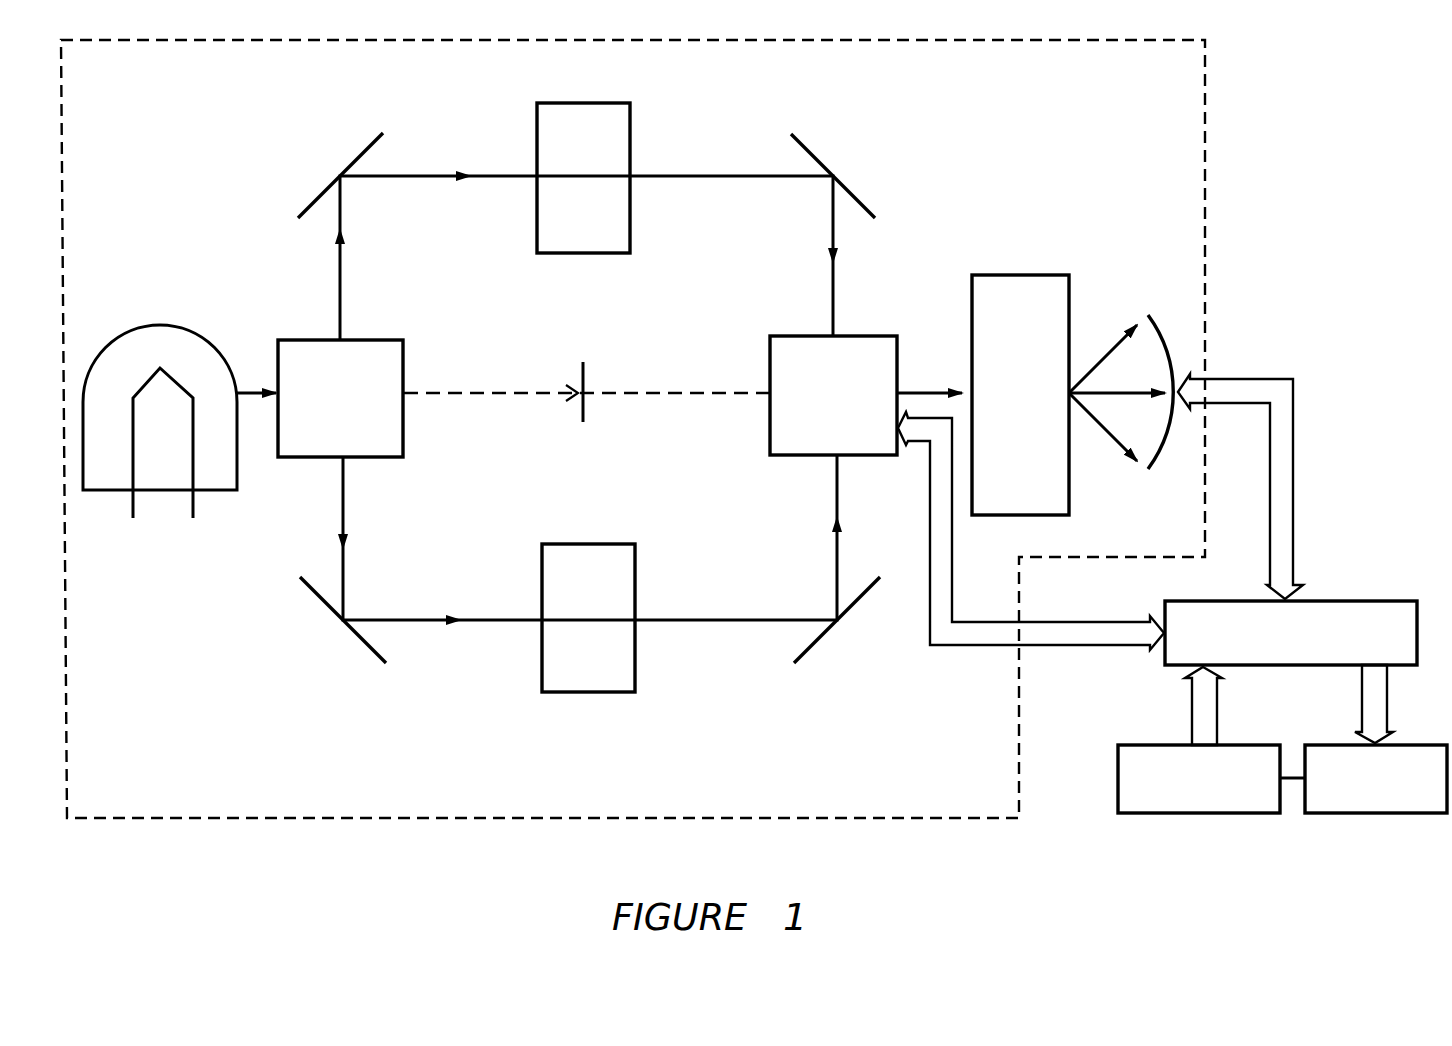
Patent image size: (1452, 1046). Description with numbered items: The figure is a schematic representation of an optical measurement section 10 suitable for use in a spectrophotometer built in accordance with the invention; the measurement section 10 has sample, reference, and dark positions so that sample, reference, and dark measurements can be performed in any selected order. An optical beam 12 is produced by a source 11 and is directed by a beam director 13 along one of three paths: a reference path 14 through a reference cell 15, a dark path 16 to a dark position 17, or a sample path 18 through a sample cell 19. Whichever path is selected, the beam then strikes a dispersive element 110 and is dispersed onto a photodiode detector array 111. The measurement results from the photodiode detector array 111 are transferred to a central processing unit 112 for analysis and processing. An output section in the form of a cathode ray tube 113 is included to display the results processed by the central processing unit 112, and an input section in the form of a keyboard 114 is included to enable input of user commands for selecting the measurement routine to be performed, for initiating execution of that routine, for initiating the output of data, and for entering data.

The optical measurement section 10 is at (214, 41).
The source 11 is at (113, 343).
The optical beam 12 is at (242, 397).
The beam director 13 is at (347, 340).
The reference path 14 is at (348, 216).
The reference cell 15 is at (631, 155).
The dark path 16 is at (490, 394).
The dark position 17 is at (586, 372).
The sample path 18 is at (342, 548).
The sample cell 19 is at (637, 674).
The dispersive element 110 is at (1070, 309).
The photodiode detector array 111 is at (1177, 355).
The central processing unit 112 is at (1394, 600).
The cathode ray tube 113 is at (1393, 813).
The keyboard 114 is at (1122, 813).